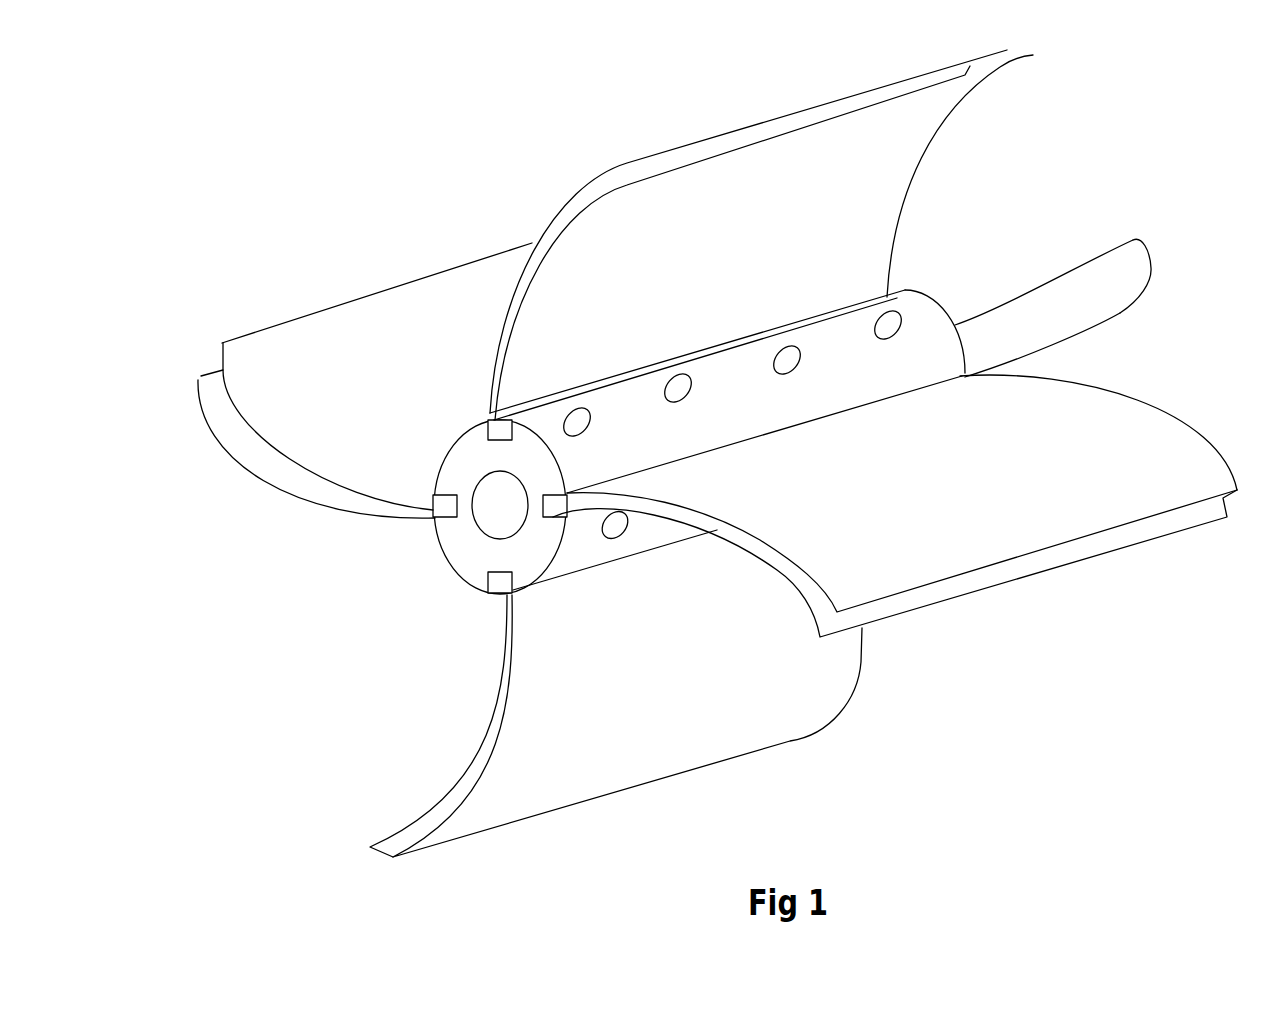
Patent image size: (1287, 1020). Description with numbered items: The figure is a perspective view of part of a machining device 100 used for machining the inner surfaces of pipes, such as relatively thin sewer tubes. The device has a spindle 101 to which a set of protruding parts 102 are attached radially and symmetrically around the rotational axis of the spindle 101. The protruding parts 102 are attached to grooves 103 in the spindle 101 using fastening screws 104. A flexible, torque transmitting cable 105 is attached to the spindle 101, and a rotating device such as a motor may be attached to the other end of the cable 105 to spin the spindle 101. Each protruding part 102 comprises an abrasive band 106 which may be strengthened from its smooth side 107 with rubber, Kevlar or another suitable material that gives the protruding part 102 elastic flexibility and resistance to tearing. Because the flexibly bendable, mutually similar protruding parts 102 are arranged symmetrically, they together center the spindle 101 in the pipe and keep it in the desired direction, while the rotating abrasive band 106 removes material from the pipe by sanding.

The machining device 100 is at (392, 134).
The spindle 101 is at (462, 517).
The protruding parts 102 is at (704, 471).
The grooves 103 is at (474, 506).
The fastening screws 104 is at (727, 440).
The flexible torque transmitting cable 105 is at (1080, 287).
The abrasive band 106 is at (803, 616).
The smooth side 107 is at (615, 284).